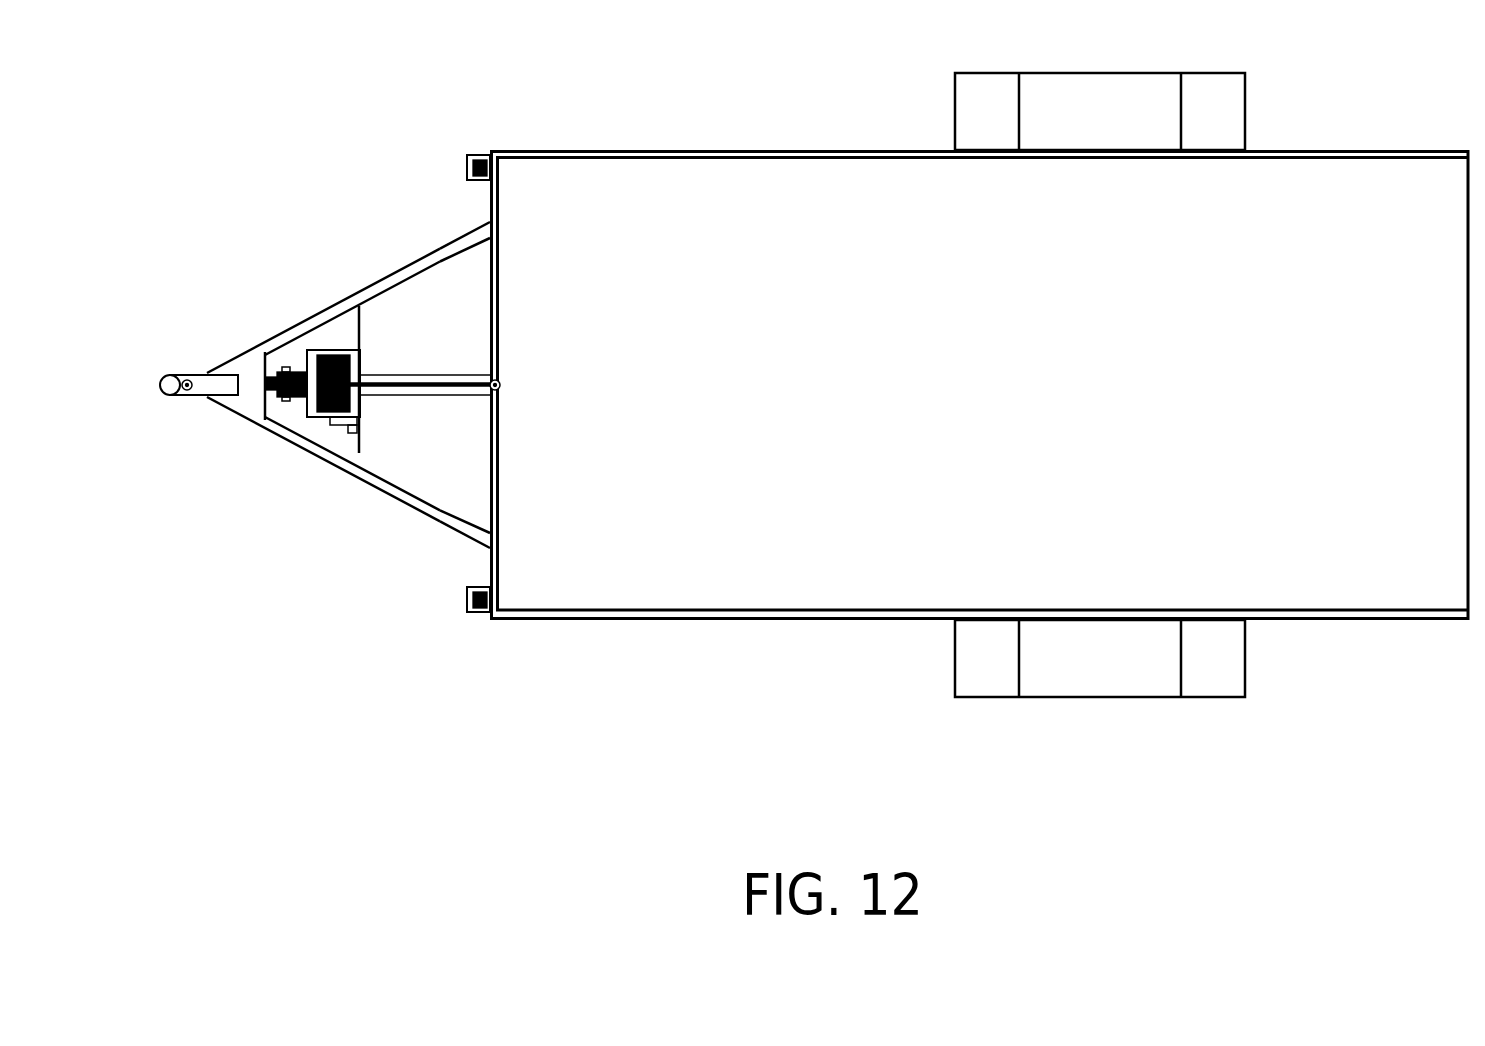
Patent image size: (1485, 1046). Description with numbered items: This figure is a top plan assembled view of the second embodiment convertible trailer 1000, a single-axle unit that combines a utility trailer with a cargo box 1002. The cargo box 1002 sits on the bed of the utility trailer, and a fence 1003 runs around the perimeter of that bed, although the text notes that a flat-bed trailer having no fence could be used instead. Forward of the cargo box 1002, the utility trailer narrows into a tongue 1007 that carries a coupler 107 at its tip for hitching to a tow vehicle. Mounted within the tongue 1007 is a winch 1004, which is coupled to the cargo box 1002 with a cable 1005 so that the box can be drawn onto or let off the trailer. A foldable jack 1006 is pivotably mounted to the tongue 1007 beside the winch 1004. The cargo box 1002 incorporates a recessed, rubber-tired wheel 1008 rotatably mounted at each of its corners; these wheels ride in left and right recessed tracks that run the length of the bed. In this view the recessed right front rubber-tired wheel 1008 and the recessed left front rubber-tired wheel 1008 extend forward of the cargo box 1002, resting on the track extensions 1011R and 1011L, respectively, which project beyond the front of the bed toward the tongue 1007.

The second embodiment convertible trailer 1000 is at (468, 56).
The cargo box 1002 is at (725, 185).
The fence 1003 is at (635, 150).
The winch 1004 is at (332, 346).
The cable 1005 is at (390, 380).
The foldable jack 1006 is at (290, 403).
The tongue 1007 is at (365, 475).
The recessed rubber-tired wheel 1008 is at (468, 155).
The right track extension 1011R is at (466, 184).
The left track extension 1011L is at (464, 583).
The coupler 107 is at (170, 375).